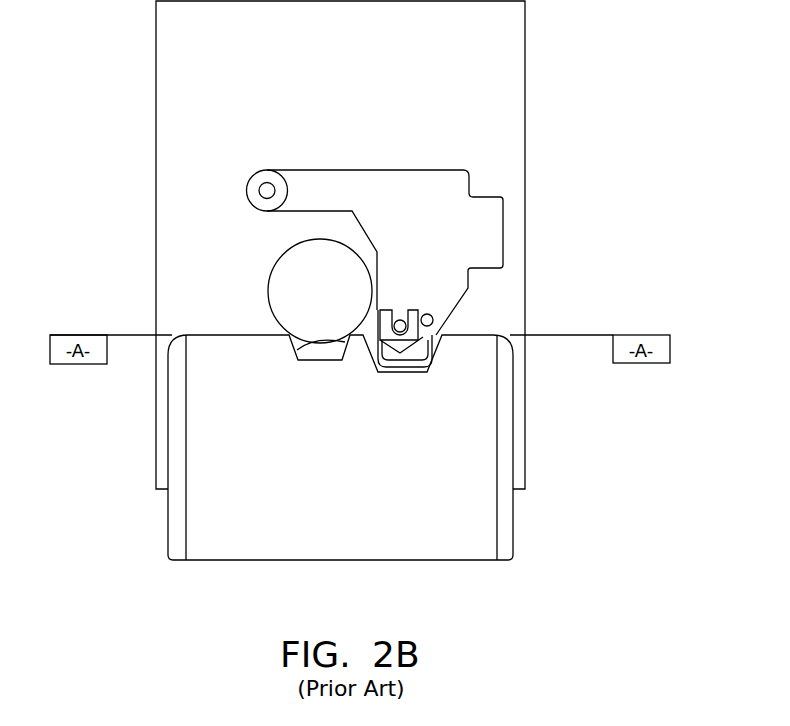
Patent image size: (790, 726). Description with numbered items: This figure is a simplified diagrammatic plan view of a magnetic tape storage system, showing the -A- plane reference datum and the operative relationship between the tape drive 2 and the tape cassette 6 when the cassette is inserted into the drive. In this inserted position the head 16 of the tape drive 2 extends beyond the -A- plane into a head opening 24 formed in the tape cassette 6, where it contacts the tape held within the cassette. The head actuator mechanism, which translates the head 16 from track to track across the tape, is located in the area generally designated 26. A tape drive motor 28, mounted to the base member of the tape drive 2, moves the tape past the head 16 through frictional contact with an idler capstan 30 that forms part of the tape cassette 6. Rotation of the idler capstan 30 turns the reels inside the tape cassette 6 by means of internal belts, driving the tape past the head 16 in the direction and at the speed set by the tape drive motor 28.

The tape drive 2 is at (493, 75).
The tape cassette 6 is at (472, 526).
The head 16 is at (405, 358).
The head opening 24 is at (435, 355).
The head actuator mechanism area 26 is at (407, 298).
The tape drive motor 28 is at (295, 268).
The idler capstan 30 is at (320, 352).